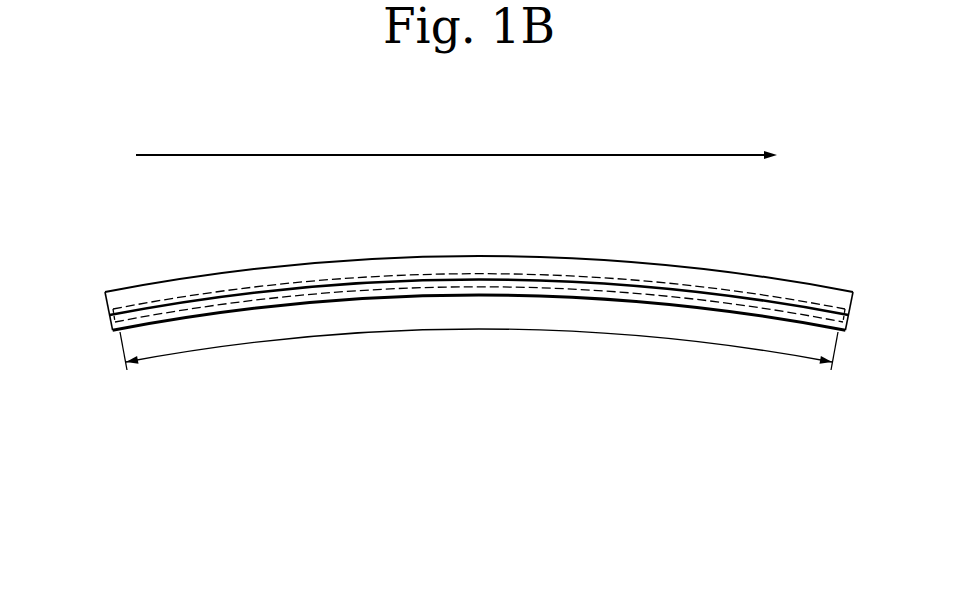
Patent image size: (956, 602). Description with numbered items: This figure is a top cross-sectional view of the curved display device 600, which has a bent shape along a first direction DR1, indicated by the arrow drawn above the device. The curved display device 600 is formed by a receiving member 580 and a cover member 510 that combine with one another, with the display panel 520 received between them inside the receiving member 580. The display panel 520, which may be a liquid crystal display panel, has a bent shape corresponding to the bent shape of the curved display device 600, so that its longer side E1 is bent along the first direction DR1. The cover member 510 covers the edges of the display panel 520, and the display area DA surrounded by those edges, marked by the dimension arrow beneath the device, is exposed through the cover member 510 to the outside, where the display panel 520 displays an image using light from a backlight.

The curved display device 600 is at (441, 265).
The receiving member 580 is at (108, 306).
The cover member 510 is at (108, 323).
The display panel 520 is at (293, 283).
The longer side E1 is at (500, 273).
The display area DA is at (479, 349).
The first direction DR1 is at (481, 156).